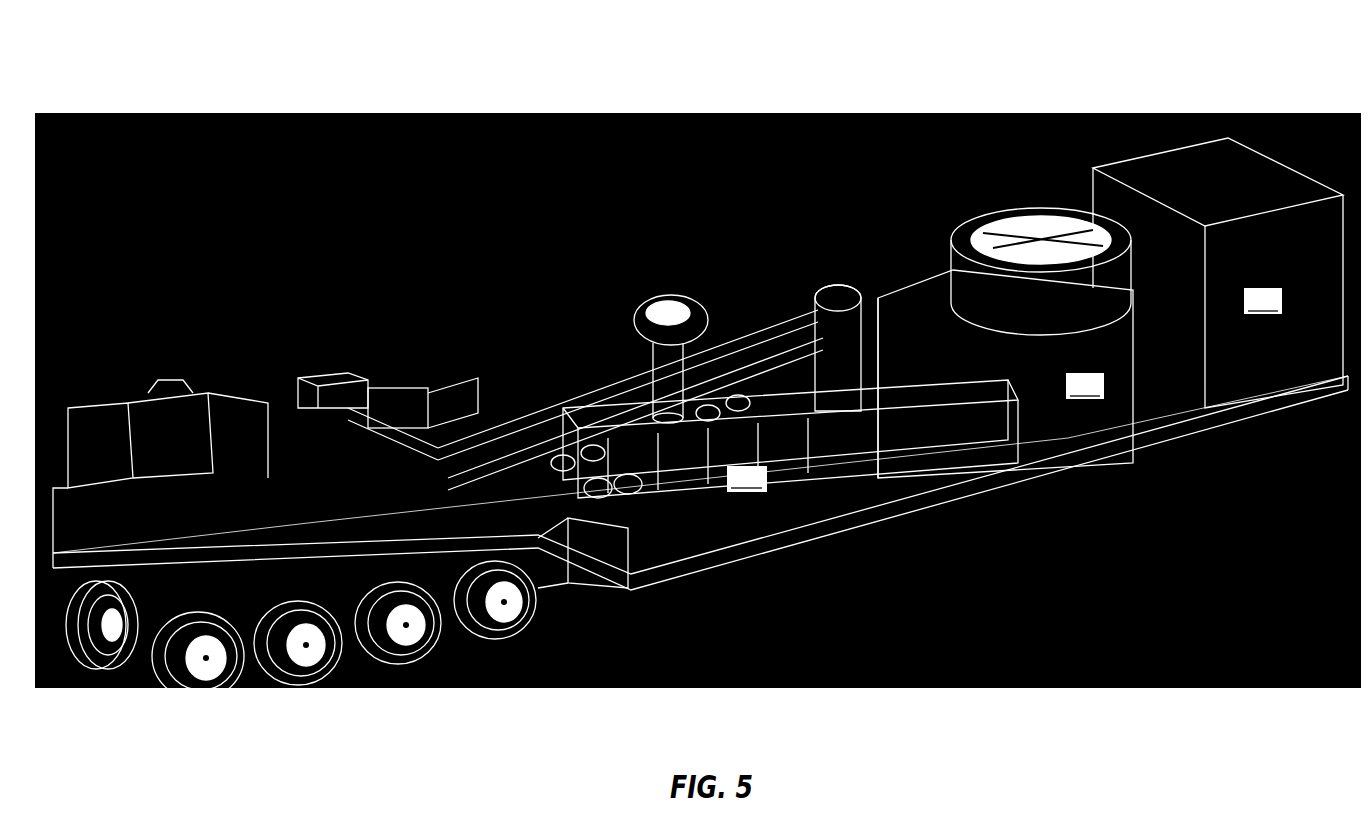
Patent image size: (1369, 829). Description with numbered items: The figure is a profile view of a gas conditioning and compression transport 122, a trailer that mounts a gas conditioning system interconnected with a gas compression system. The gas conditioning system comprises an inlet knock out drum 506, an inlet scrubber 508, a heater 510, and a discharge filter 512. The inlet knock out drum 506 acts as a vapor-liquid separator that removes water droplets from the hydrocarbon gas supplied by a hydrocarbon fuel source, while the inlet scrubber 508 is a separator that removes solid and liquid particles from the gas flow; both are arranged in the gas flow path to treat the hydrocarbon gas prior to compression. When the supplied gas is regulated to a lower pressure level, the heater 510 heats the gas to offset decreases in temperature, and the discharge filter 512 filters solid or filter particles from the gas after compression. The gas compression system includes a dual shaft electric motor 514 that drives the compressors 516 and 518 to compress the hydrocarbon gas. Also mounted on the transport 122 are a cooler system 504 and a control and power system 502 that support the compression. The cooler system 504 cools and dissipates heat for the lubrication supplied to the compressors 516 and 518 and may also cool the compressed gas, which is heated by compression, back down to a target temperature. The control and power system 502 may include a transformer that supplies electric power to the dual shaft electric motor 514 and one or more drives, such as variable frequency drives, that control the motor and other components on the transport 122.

The gas conditioning and compression transport 122 is at (138, 63).
The control and power system 502 is at (1218, 273).
The cooler system 504 is at (1005, 374).
The inlet knock out drum 506 is at (778, 484).
The inlet scrubber 508 is at (832, 276).
The heater 510 is at (990, 212).
The discharge filter 512 is at (690, 290).
The dual shaft electric motor 514 is at (362, 395).
The compressor 516 is at (272, 410).
The compressor 518 is at (623, 580).